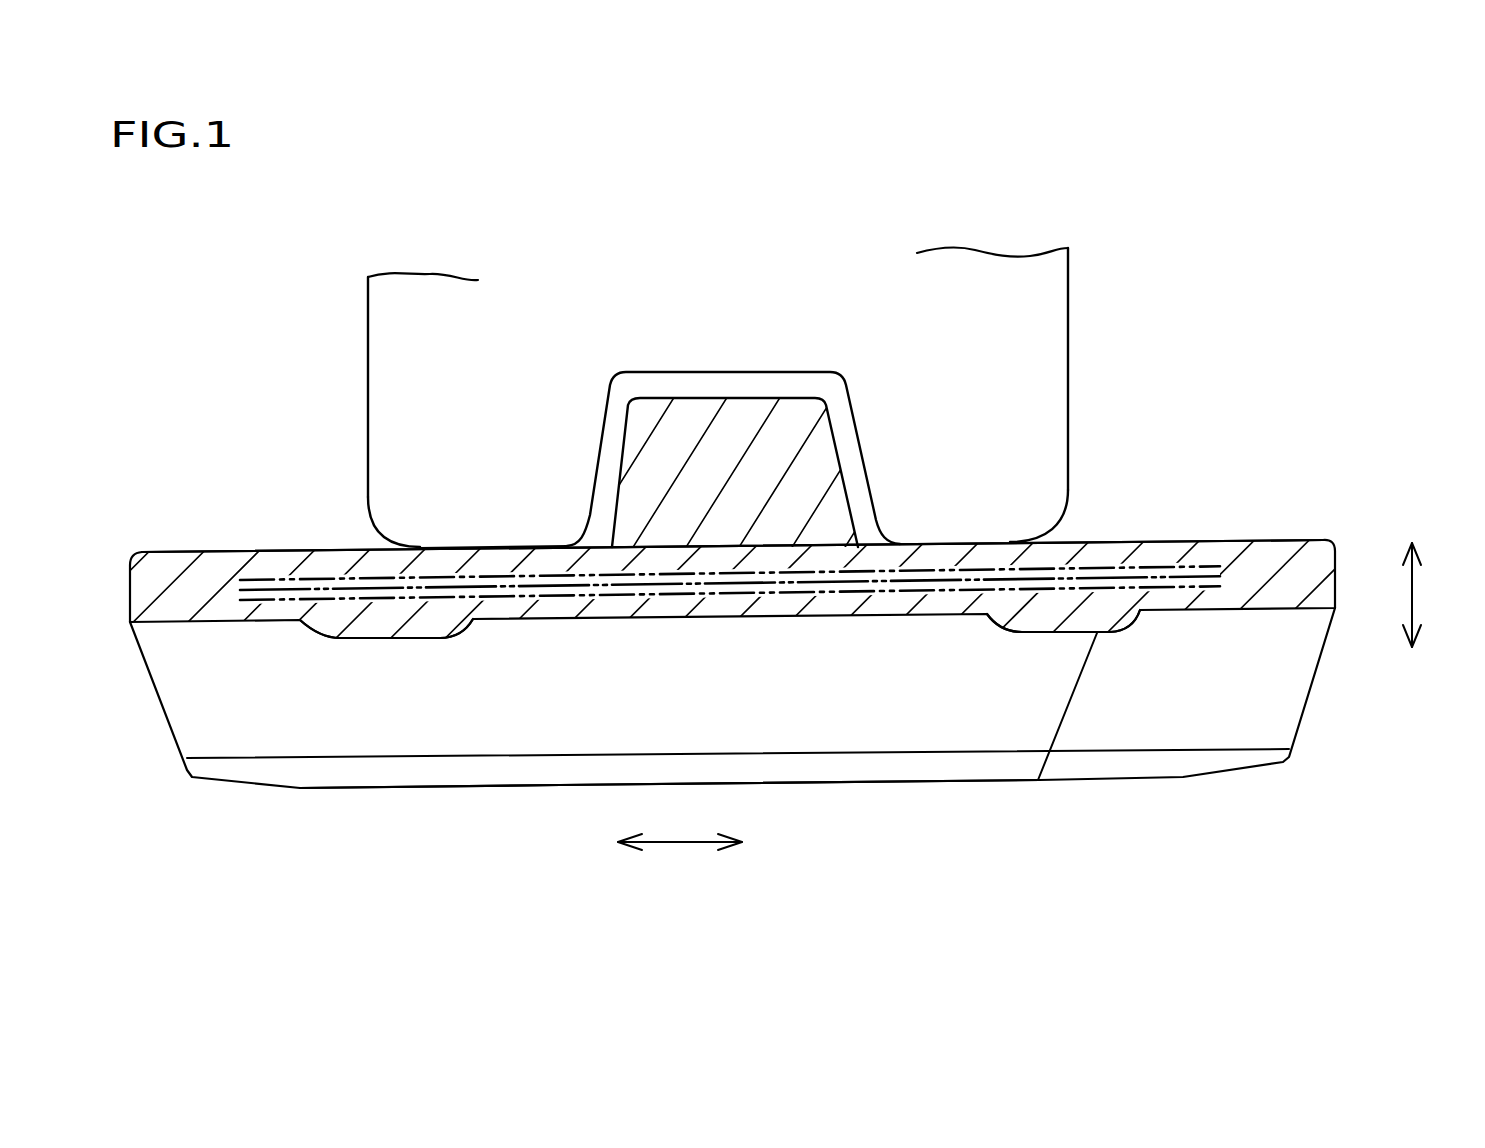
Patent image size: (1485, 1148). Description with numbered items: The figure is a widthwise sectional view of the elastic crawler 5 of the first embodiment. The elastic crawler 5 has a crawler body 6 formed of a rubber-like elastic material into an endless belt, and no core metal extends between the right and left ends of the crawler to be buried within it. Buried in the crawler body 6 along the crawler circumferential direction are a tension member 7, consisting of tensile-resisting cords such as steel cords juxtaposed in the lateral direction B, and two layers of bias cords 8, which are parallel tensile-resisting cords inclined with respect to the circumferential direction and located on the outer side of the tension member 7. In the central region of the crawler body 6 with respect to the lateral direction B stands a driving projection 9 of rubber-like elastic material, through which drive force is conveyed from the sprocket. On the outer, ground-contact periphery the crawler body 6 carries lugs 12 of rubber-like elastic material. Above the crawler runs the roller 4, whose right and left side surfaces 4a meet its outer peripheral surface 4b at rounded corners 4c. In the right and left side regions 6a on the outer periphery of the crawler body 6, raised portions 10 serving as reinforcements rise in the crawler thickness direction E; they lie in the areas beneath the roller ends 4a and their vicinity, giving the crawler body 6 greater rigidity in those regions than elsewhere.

The roller 4 is at (1072, 310).
The side surface of the roller 4a is at (367, 433).
The outer peripheral surface of the roller 4b is at (360, 547).
The corner of the roller 4c is at (393, 527).
The elastic crawler 5 is at (1247, 518).
The crawler body 6 is at (1307, 541).
The side region of the crawler body 6a is at (263, 547).
The tension member 7 is at (1135, 542).
The bias cords 8 is at (1143, 609).
The driving projection 9 is at (757, 407).
The raised portion 10 is at (370, 622).
The lug 12 is at (907, 782).
The lateral direction B is at (678, 846).
The crawler thickness direction E is at (1415, 588).